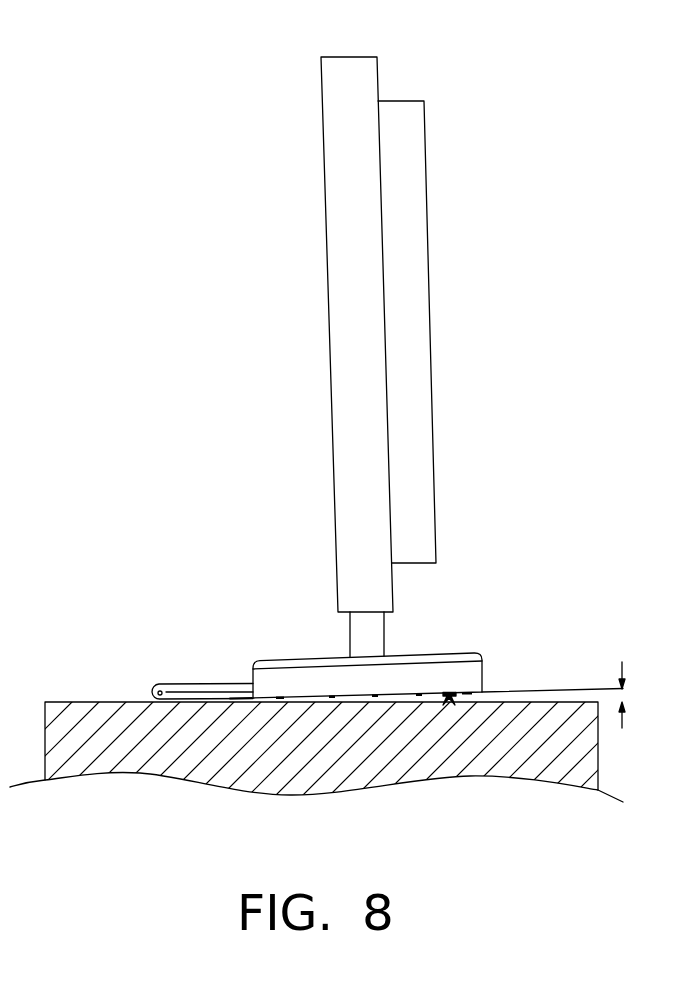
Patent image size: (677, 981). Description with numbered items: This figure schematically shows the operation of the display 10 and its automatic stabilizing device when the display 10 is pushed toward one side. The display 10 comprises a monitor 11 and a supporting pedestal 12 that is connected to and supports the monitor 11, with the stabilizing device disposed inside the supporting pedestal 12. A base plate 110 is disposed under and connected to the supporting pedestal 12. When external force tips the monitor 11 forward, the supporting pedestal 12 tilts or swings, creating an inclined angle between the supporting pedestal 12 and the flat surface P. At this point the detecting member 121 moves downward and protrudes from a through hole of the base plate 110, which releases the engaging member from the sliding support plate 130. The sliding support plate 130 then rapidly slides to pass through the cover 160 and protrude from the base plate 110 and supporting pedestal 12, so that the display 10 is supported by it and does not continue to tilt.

The display 10 is at (336, 444).
The monitor 11 is at (333, 223).
The supporting pedestal 12 is at (305, 663).
The base plate 110 is at (280, 700).
The detecting member 121 is at (448, 705).
The sliding support plate 130 is at (199, 682).
The cover 160 is at (242, 697).
The flat surface P is at (67, 700).